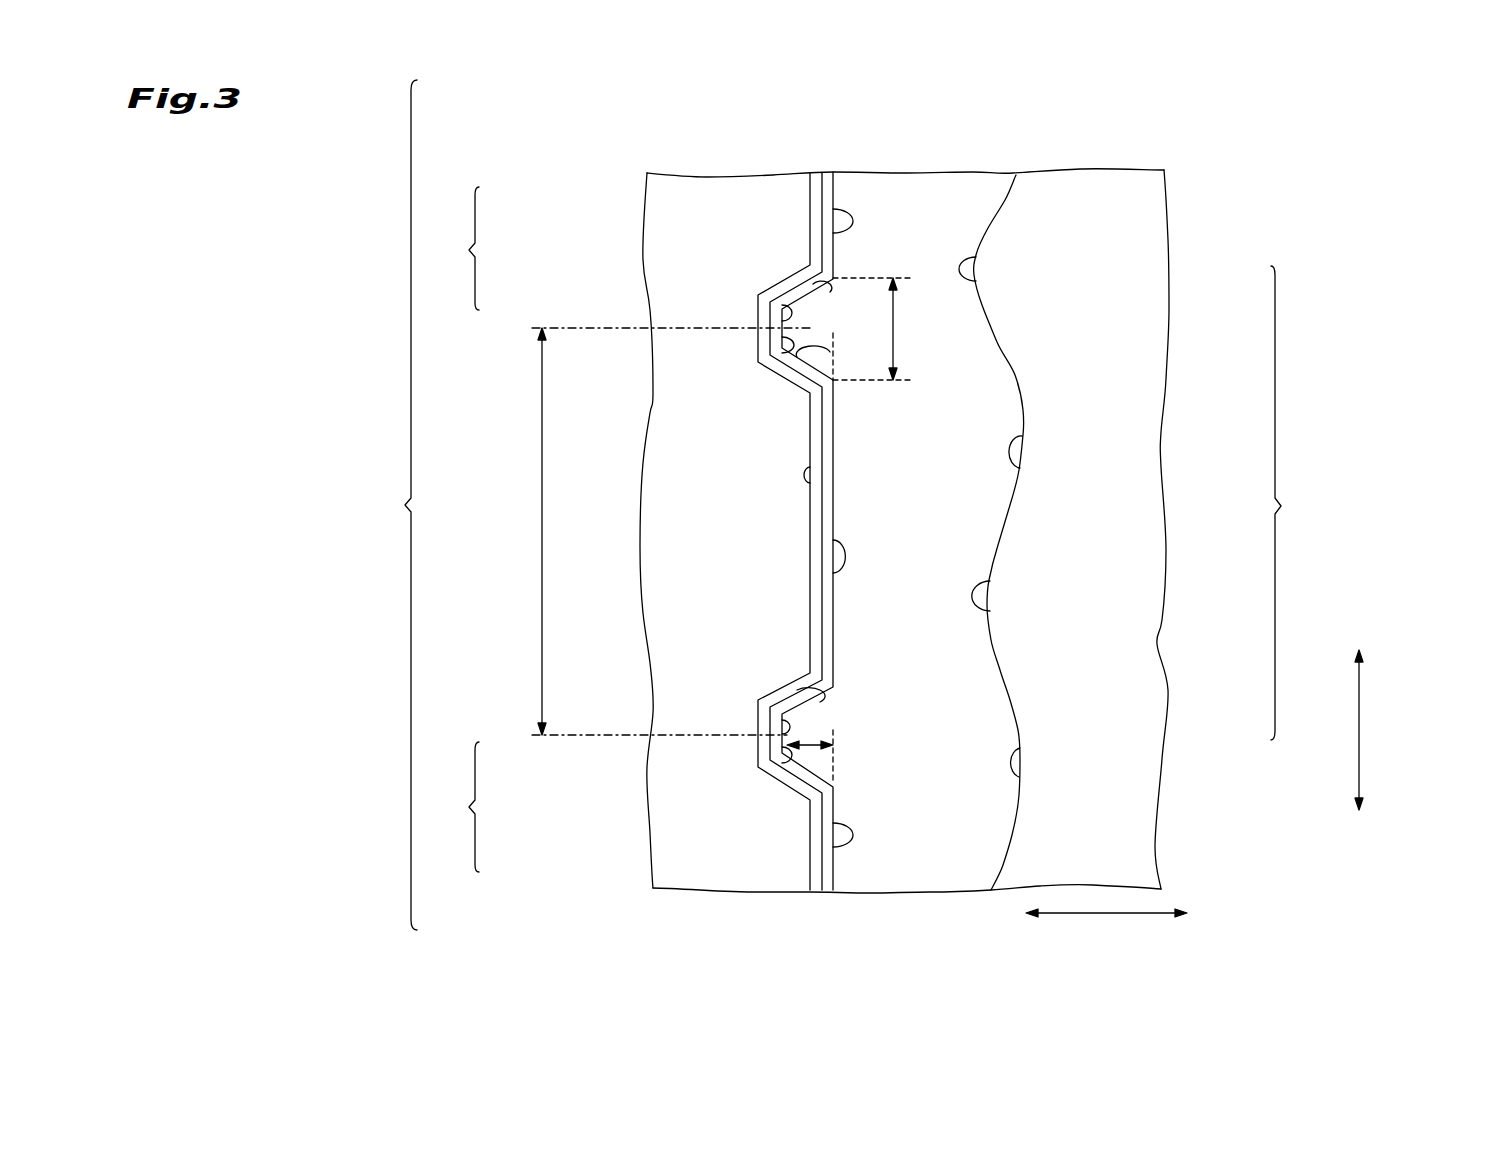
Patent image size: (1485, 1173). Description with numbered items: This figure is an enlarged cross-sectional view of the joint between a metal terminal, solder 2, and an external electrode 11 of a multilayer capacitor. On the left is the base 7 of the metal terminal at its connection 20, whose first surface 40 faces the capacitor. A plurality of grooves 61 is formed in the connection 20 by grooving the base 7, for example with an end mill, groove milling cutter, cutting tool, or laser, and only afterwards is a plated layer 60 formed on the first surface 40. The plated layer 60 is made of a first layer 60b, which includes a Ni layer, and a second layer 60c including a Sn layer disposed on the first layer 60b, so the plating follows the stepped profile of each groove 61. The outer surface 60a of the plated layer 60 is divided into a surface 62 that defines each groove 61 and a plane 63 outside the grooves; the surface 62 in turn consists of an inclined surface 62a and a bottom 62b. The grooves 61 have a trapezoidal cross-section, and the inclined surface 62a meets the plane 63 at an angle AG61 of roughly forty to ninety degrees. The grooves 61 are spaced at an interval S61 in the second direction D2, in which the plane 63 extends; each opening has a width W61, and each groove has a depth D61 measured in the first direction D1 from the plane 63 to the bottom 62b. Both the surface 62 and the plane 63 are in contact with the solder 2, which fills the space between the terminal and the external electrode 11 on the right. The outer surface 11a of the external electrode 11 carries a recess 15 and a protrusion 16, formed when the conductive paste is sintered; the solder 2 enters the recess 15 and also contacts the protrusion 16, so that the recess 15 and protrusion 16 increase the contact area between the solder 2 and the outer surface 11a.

The solder 2 is at (977, 192).
The base 7 is at (722, 200).
The external electrode 11 is at (1098, 208).
The outer surface of the external electrode 11a is at (1303, 503).
The recess 15 is at (1020, 435).
The protrusion 16 is at (977, 265).
The connection 20 is at (673, 852).
The first surface 40 is at (805, 478).
The plated layer 60 is at (880, 101).
The outer surface of the plated layer 60a is at (382, 505).
The first layer 60b is at (812, 180).
The second layer 60c is at (830, 180).
The groove 61 is at (845, 298).
The surface defining the groove 62 is at (456, 529).
The inclined surface 62a is at (815, 290).
The bottom 62b is at (787, 310).
The plane 63 is at (833, 212).
The angle AG61 is at (817, 353).
The width W61 is at (903, 327).
The interval S61 is at (535, 522).
The depth D61 is at (800, 745).
The first direction D1 is at (1093, 915).
The second direction D2 is at (1360, 742).